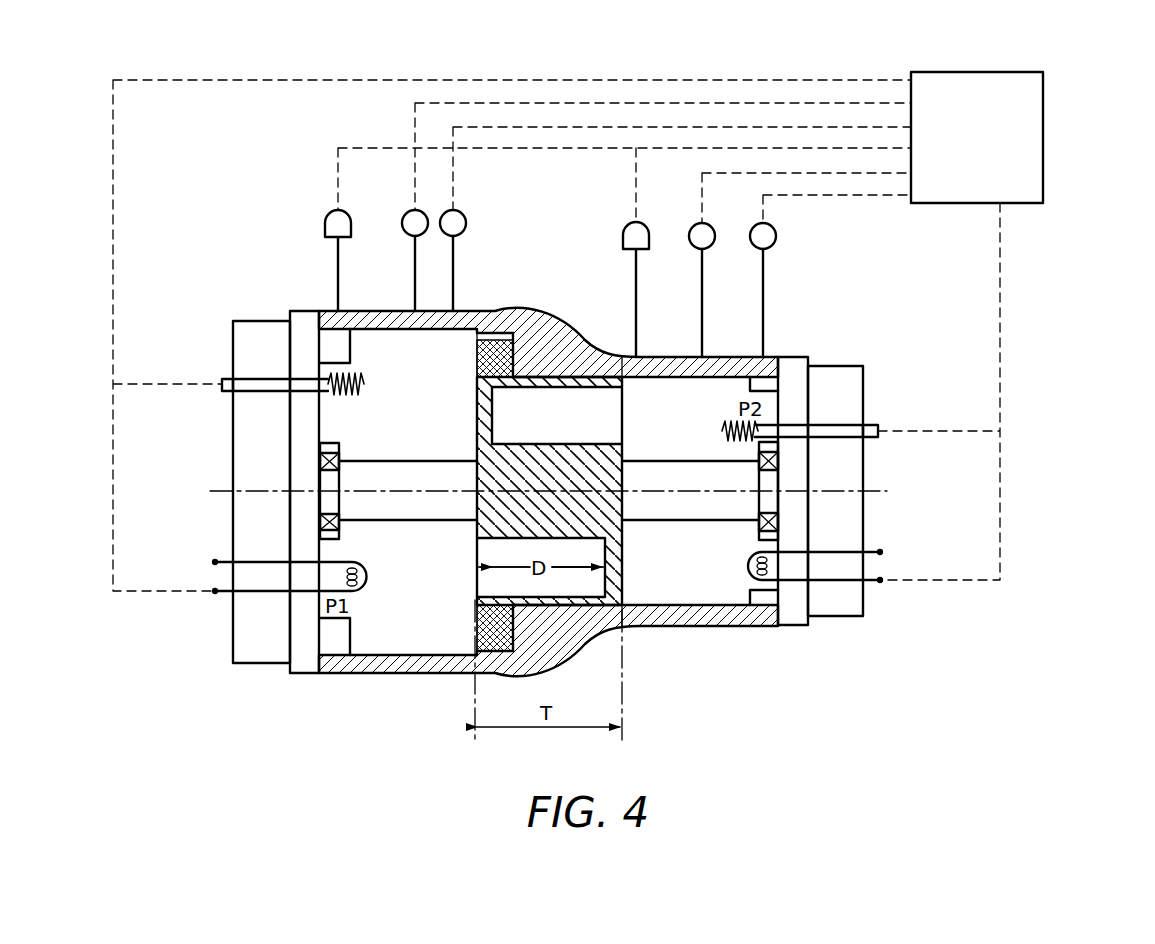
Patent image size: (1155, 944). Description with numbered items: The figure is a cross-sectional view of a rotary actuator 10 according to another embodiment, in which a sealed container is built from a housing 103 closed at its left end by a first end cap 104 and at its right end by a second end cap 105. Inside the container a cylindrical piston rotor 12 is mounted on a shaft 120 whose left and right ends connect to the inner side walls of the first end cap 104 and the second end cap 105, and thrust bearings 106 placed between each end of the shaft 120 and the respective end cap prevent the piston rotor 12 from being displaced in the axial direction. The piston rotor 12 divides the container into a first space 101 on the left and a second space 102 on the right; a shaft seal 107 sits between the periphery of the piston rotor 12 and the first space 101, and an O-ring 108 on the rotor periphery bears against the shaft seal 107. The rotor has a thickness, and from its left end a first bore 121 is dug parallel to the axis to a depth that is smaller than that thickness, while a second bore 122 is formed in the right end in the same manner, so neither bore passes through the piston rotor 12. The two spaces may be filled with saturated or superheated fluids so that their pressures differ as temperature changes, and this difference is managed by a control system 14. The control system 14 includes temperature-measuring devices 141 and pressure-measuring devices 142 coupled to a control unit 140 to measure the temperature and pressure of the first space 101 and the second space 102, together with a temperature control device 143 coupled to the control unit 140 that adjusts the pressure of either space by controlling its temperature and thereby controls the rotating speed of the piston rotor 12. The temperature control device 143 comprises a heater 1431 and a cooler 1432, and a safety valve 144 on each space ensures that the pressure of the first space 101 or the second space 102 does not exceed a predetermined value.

The rotary actuator 10 is at (597, 343).
The piston rotor 12 is at (630, 447).
The control system 14 is at (1018, 136).
The first space 101 is at (368, 492).
The second space 102 is at (716, 491).
The housing 103 is at (373, 312).
The first end cap 104 is at (263, 321).
The second end cap 105 is at (797, 368).
The thrust bearing 106 is at (320, 518).
The shaft seal 107 is at (490, 357).
The O-ring 108 is at (560, 318).
The shaft 120 is at (378, 468).
The first bore 121 is at (472, 587).
The second bore 122 is at (598, 414).
The control unit 140 is at (977, 137).
The temperature-measuring device 141 is at (467, 223).
The pressure-measuring device 142 is at (403, 217).
The temperature control device 143 is at (574, 474).
The safety valve 144 is at (325, 227).
The heater 1431 is at (222, 381).
The cooler 1432 is at (228, 592).